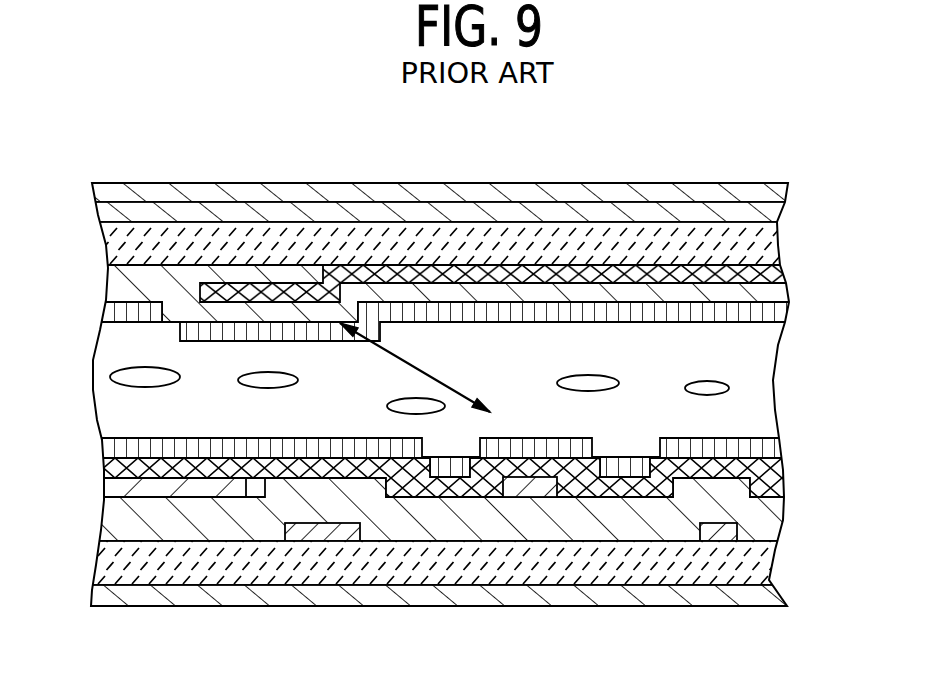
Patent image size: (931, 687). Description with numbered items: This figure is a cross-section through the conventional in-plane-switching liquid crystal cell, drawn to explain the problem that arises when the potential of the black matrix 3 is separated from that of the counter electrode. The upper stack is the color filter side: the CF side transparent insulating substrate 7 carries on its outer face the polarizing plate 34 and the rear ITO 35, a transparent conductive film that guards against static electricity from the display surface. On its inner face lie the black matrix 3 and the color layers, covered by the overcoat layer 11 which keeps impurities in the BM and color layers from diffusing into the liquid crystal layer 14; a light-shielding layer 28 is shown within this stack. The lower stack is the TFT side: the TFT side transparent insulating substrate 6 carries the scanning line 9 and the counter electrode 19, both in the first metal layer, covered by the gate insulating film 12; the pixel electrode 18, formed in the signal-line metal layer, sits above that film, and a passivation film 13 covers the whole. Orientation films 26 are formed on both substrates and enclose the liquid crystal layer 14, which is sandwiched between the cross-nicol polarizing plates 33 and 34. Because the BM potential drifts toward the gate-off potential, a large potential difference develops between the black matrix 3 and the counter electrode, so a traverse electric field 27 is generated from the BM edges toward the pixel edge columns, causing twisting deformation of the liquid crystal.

The black matrix 3 is at (112, 269).
The polarizing plate 34 is at (788, 190).
The rear ITO 35 is at (778, 220).
The CF side transparent insulating substrate 7 is at (762, 243).
The overcoat layer 11 is at (762, 295).
The light shielding (black matrix) layer 28 is at (590, 283).
The orientation film 26 is at (765, 314).
The liquid crystal layer 14 is at (760, 368).
The traverse electric field 27 is at (420, 368).
The passivation film 13 is at (765, 470).
The gate insulating film 12 is at (756, 518).
The pixel electrode 18 is at (530, 488).
The counter electrode 19 is at (323, 532).
The scanning line 9 is at (712, 532).
The TFT side transparent insulating substrate 6 is at (750, 563).
The polarizing plate 33 is at (778, 593).